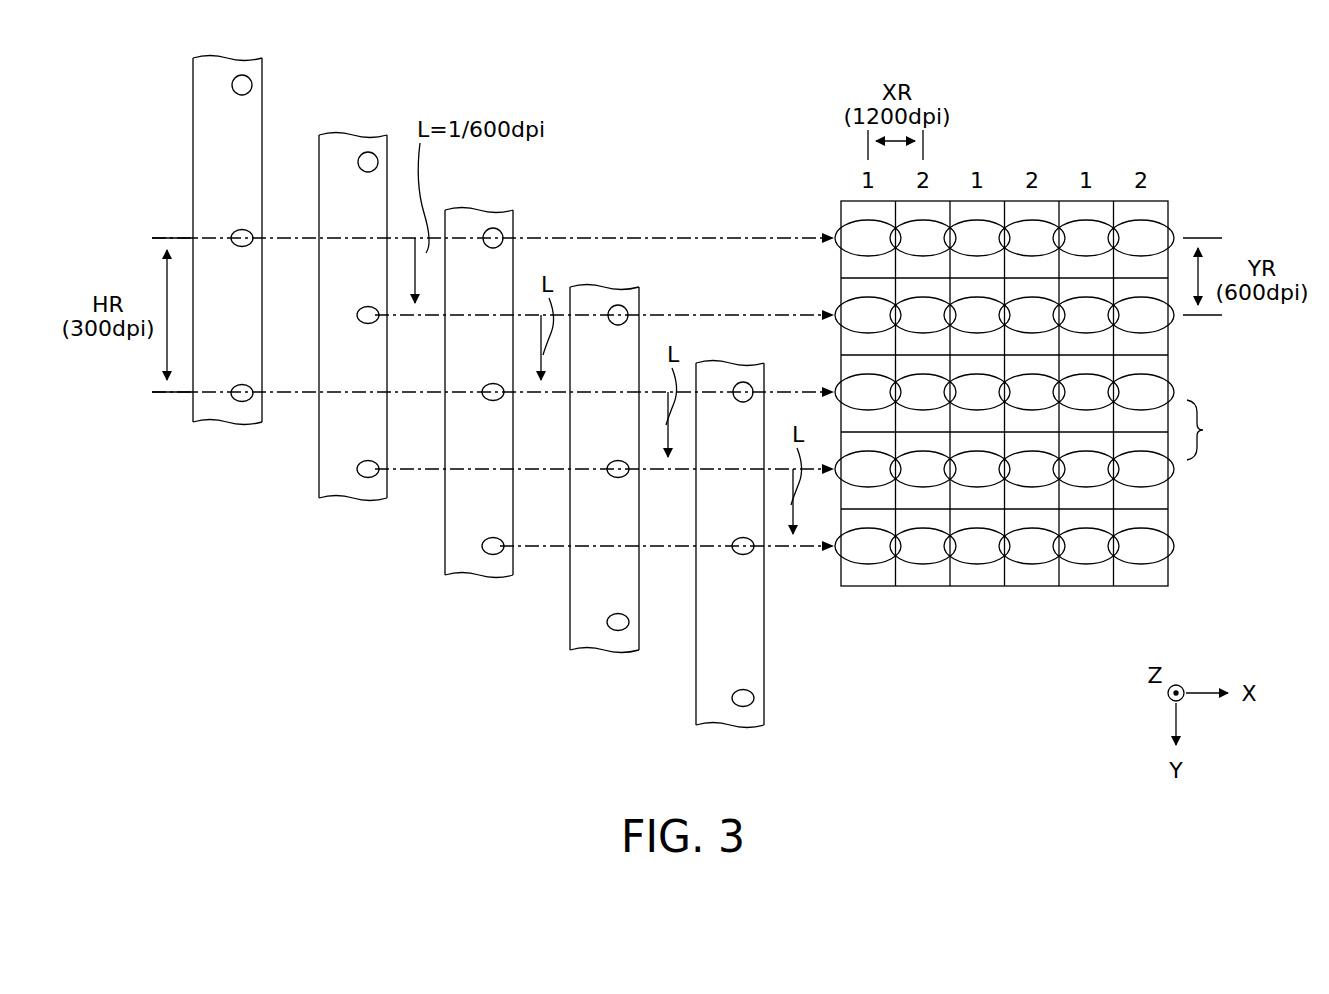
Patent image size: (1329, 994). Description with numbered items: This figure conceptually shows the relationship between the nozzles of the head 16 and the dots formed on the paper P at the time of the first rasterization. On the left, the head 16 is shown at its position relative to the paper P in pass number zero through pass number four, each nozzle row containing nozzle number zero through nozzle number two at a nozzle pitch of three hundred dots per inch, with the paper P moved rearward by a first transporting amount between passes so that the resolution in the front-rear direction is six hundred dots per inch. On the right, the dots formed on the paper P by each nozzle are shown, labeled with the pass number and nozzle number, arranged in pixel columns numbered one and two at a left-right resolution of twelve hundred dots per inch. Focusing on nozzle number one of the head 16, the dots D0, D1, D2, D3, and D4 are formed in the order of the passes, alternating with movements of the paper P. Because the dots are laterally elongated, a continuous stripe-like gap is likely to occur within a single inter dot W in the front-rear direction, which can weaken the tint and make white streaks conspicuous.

The head 16 is at (226, 428).
The paper P is at (928, 575).
The dot D0 is at (1105, 222).
The dot D1 is at (1108, 330).
The dot D2 is at (1172, 388).
The dot D3 is at (1168, 477).
The dot D4 is at (1100, 531).
The inter dot W is at (1211, 430).